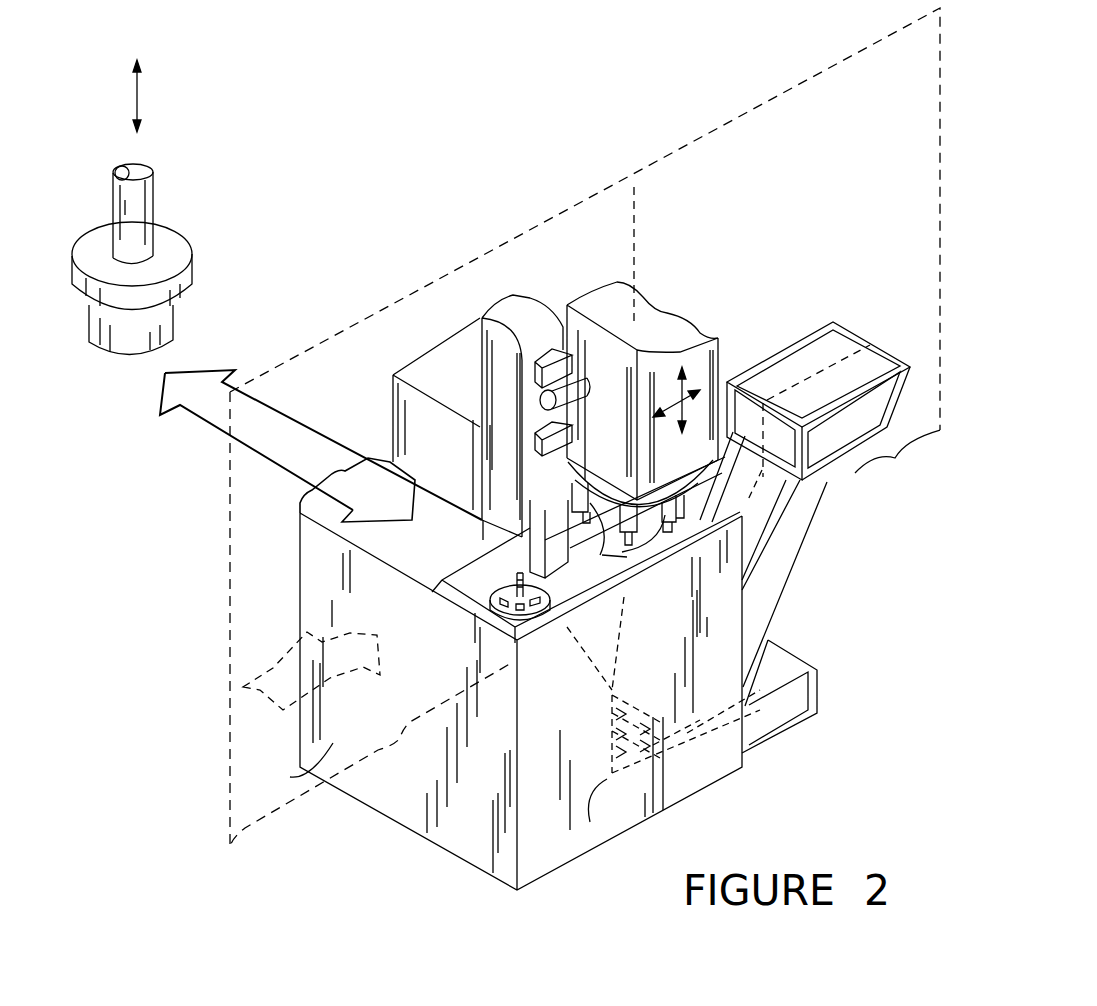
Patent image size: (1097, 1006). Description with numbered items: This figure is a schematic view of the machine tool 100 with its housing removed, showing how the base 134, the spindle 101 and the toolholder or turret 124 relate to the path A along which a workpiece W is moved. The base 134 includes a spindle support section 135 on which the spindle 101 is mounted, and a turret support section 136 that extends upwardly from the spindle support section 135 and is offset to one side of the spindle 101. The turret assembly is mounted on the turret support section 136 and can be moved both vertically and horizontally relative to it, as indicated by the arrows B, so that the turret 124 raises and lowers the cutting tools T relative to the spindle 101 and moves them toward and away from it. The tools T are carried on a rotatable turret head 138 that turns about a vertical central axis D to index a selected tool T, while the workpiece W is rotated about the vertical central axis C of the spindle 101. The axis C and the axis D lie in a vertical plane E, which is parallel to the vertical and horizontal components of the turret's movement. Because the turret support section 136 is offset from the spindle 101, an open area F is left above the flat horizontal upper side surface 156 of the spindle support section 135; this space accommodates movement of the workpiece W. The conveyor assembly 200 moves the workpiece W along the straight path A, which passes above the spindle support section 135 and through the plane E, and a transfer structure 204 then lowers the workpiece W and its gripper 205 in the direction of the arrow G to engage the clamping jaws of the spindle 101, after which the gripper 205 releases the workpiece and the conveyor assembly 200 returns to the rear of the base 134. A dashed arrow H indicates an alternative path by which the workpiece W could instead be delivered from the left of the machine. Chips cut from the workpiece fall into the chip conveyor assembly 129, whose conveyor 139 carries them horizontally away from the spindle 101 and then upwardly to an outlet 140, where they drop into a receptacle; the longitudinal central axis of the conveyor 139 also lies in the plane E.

The machine tool 100 is at (767, 210).
The spindle 101 is at (513, 616).
The turret 124 is at (665, 342).
The chip conveyor assembly 129 is at (785, 580).
The base 134 is at (398, 827).
The spindle support section 135 is at (291, 763).
The turret support section 136 is at (520, 320).
The turret head 138 is at (680, 492).
The conveyor 139 is at (707, 775).
The outlet 140 is at (873, 427).
The upper side surface 156 is at (566, 550).
The conveyor assembly 200 is at (200, 234).
The transfer structure 204 is at (143, 202).
The gripper 205 is at (183, 287).
The path A is at (207, 405).
The arrows B is at (667, 397).
The central axis C is at (508, 576).
The central axis D is at (635, 248).
The vertical plane E is at (755, 106).
The open area F is at (357, 487).
The arrow G is at (138, 95).
The arrow H is at (273, 670).
The cutting tools T is at (590, 568).
The workpiece W is at (112, 342).